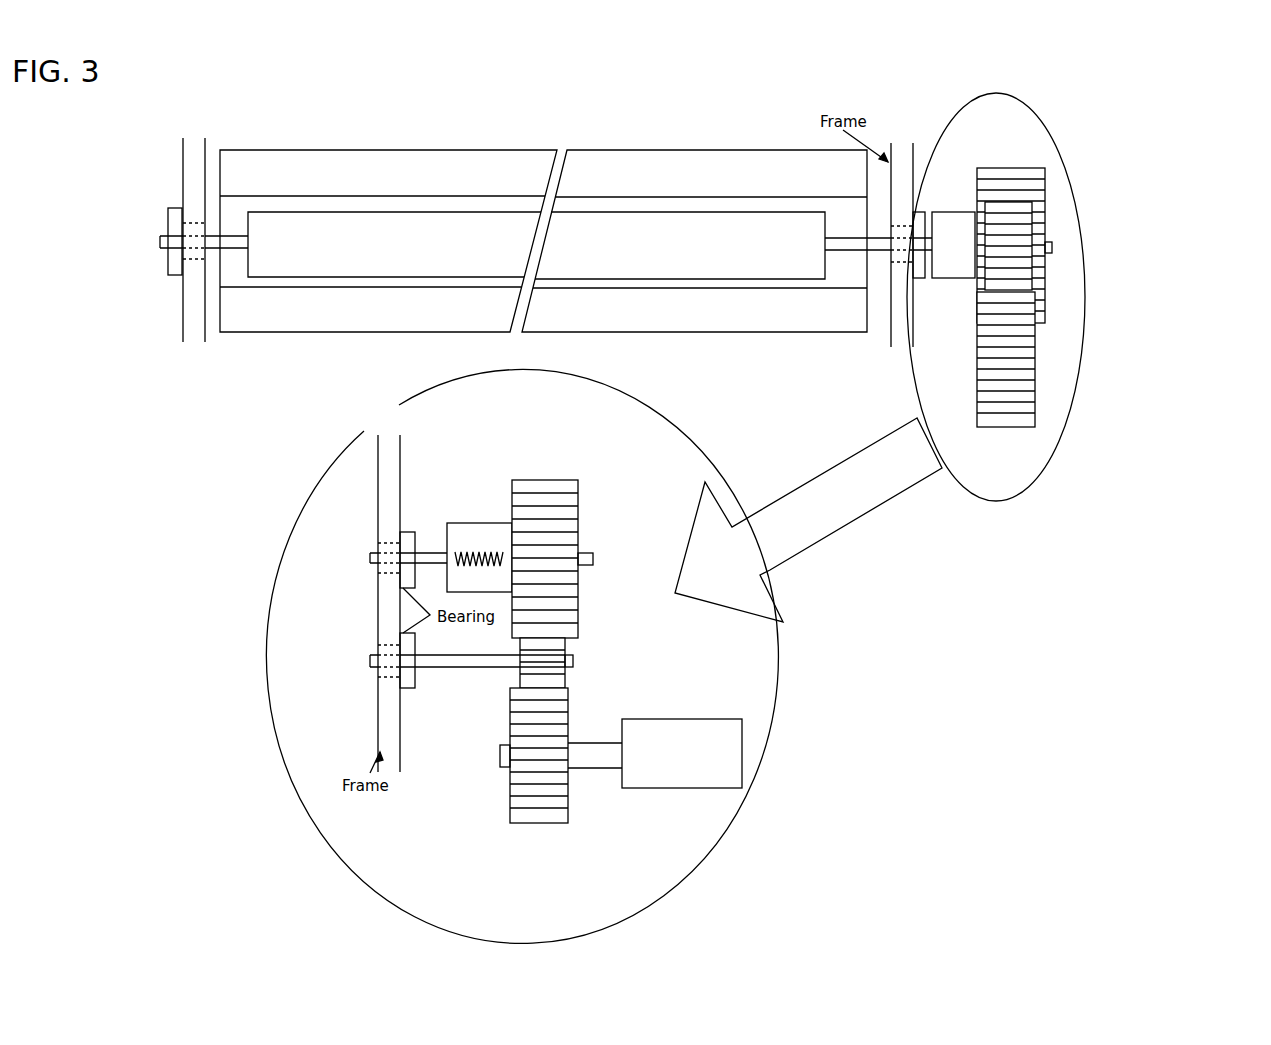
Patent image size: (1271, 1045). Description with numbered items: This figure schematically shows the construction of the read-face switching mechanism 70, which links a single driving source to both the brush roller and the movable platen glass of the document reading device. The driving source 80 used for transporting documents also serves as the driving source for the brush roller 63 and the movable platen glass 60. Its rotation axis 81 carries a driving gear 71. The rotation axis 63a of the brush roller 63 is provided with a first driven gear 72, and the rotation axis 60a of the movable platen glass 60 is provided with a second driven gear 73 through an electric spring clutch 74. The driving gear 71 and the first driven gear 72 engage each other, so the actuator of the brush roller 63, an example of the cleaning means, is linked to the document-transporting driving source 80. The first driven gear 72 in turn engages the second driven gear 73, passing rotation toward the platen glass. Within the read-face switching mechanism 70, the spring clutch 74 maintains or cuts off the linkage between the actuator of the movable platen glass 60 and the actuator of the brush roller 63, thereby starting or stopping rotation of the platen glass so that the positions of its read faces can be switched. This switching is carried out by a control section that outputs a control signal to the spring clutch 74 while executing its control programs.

The movable platen glass 60 is at (677, 163).
The brush roller 63 is at (667, 252).
The read-face switching mechanism 70 is at (358, 468).
The driving gear 71 is at (1023, 392).
The first driven gear 72 is at (1020, 208).
The second driven gear 73 is at (980, 168).
The spring clutch 74 is at (945, 278).
The driving source 80 is at (742, 757).
The rotation axis 81 is at (603, 768).
The rotation axis 60a is at (435, 552).
The rotation axis 63a is at (480, 667).